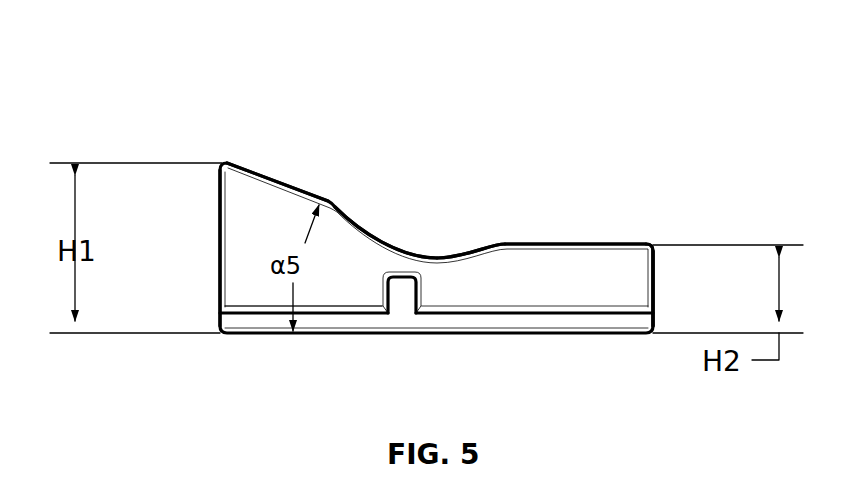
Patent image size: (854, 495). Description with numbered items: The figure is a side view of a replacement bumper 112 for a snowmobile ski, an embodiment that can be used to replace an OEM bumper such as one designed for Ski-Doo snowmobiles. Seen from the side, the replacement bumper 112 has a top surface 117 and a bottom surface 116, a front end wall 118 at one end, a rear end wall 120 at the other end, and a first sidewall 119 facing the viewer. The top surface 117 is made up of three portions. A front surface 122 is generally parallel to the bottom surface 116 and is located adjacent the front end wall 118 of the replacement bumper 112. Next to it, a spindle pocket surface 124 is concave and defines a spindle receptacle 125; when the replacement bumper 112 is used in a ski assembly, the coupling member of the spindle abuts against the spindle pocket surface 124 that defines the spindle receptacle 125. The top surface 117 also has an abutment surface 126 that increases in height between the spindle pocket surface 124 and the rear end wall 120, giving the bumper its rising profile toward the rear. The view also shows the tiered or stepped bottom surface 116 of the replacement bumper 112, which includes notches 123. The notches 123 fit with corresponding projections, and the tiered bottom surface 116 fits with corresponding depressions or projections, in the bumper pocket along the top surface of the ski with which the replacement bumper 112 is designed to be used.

The replacement bumper 112 is at (214, 56).
The bottom surface 116 is at (486, 335).
The top surface 117 is at (542, 243).
The front end wall 118 is at (655, 285).
The first sidewall 119 is at (272, 278).
The rear end wall 120 is at (220, 228).
The front surface 122 is at (611, 244).
The notches 123 is at (403, 279).
The spindle pocket surface 124 is at (396, 248).
The spindle receptacle 125 is at (442, 246).
The abutment surface 126 is at (292, 186).